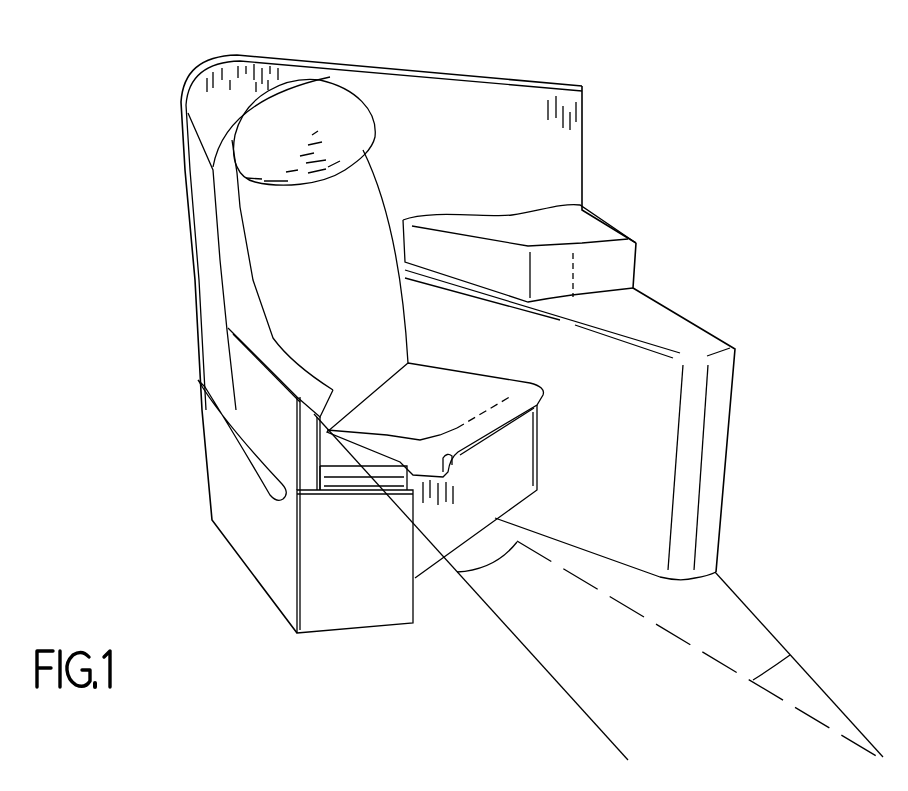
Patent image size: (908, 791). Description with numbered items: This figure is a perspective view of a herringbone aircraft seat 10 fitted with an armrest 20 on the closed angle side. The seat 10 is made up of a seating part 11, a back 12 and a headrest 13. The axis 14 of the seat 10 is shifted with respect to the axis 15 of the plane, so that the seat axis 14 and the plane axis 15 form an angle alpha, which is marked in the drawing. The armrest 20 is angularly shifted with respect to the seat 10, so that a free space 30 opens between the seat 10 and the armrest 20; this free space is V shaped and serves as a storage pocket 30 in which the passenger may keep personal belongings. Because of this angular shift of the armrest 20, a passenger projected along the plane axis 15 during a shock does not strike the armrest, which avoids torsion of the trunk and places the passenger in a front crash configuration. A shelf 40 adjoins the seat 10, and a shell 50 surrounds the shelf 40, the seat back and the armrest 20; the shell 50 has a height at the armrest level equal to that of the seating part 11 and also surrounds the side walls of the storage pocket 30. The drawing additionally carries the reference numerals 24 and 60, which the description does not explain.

The aircraft seat 10 is at (176, 74).
The seating part 11 is at (450, 400).
The back 12 is at (313, 245).
The headrest 13 is at (327, 115).
The axis of the seat 14 is at (700, 647).
The axis of the plane 15 is at (762, 620).
The armrest 20 is at (243, 378).
The seat longitudinal axis 24 is at (525, 645).
The storage pocket 30 is at (346, 481).
The shelf 40 is at (650, 327).
The shell 50 is at (480, 132).
The handle lever 60 is at (257, 397).